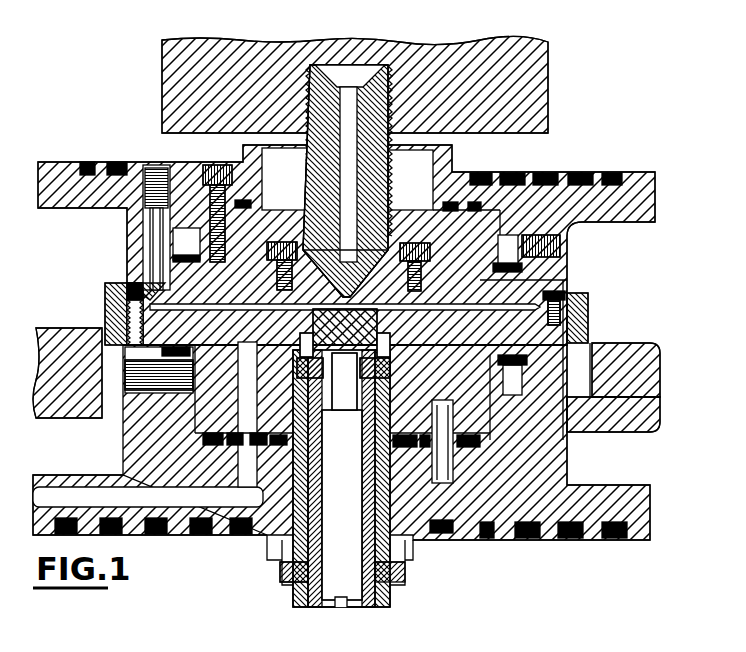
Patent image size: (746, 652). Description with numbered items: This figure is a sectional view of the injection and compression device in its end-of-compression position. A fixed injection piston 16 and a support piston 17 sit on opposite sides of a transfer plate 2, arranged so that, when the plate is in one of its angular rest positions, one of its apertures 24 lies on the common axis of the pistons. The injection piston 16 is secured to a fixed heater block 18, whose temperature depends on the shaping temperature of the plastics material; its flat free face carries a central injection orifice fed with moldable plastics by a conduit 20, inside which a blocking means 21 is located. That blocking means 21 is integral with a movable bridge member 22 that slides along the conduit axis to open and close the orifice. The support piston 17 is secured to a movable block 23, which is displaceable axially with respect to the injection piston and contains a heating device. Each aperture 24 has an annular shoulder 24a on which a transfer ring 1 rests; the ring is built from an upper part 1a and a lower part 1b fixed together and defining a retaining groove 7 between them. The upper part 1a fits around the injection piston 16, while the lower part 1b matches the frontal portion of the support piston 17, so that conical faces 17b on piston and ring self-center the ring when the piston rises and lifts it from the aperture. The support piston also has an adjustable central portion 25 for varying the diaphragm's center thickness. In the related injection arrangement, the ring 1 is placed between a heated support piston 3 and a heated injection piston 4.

The injection piston 4 is at (578, 53).
The movable bridge member 22 is at (542, 108).
The conduit 20 is at (350, 177).
The blocking means 21 is at (362, 234).
The fixed heater block 18 is at (640, 208).
The fixed injection piston 16 is at (563, 282).
The transfer ring 1 is at (575, 320).
The upper part of the ring 1a is at (127, 281).
The lower part of the ring 1b is at (120, 314).
The retaining groove 7 is at (150, 303).
The support piston 17 is at (423, 363).
The conical faces 17b is at (585, 322).
The transfer plate 2 is at (617, 358).
The apertures 24 is at (112, 378).
The annular shoulder 24a is at (583, 397).
The central portion 25 is at (305, 345).
The movable block 23 is at (598, 500).
The support piston 3 is at (530, 562).